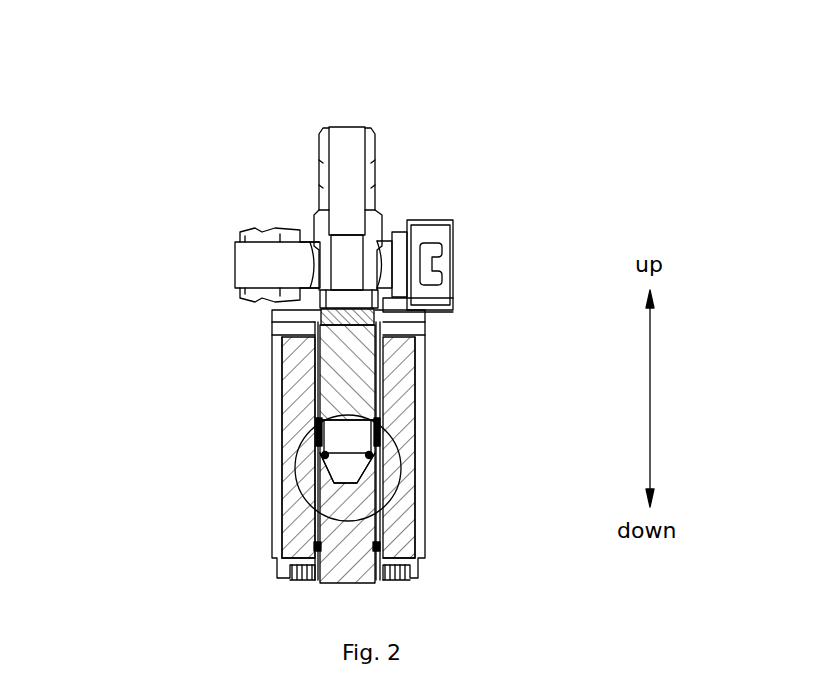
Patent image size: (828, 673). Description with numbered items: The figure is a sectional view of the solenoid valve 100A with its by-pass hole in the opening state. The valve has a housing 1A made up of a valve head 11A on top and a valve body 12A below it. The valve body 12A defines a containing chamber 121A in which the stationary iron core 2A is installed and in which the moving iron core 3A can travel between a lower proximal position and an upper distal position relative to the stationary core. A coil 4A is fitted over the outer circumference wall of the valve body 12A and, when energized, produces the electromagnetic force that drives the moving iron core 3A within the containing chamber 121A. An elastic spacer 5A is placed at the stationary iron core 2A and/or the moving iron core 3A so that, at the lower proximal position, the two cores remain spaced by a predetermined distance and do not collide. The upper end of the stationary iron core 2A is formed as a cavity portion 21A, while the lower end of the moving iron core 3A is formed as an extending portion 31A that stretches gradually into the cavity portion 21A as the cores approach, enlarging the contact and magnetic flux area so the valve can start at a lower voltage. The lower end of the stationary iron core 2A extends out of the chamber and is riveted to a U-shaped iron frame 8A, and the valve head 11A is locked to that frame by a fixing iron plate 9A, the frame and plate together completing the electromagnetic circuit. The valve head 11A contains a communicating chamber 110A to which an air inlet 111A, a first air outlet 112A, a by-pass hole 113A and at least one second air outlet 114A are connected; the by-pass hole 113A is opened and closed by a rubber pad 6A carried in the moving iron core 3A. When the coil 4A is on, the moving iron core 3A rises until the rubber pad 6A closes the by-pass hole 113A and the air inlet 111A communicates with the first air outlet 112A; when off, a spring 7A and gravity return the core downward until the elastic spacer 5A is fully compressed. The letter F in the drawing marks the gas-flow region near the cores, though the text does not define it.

The solenoid valve 100A is at (400, 118).
The air inlet 111A is at (345, 163).
The communicating chamber 110A is at (313, 235).
The first air outlet 112A is at (350, 227).
The second air outlet 114A is at (267, 262).
The by-pass hole 113A is at (323, 287).
The rubber pad 6A is at (310, 298).
The valve head 11A is at (382, 227).
The valve body 12A is at (408, 328).
The housing 1A is at (560, 183).
The fixing iron plate 9A is at (392, 338).
The U-shaped iron frame 8A is at (280, 540).
The coil 4A is at (388, 550).
The moving iron core 3A is at (372, 393).
The spring 7A is at (376, 430).
The elastic spacer 5A is at (372, 457).
The stationary iron core 2A is at (372, 520).
The cavity portion 21A is at (330, 483).
The containing chamber 121A is at (330, 427).
The extending portion 31A is at (320, 445).
The flow region F is at (297, 470).